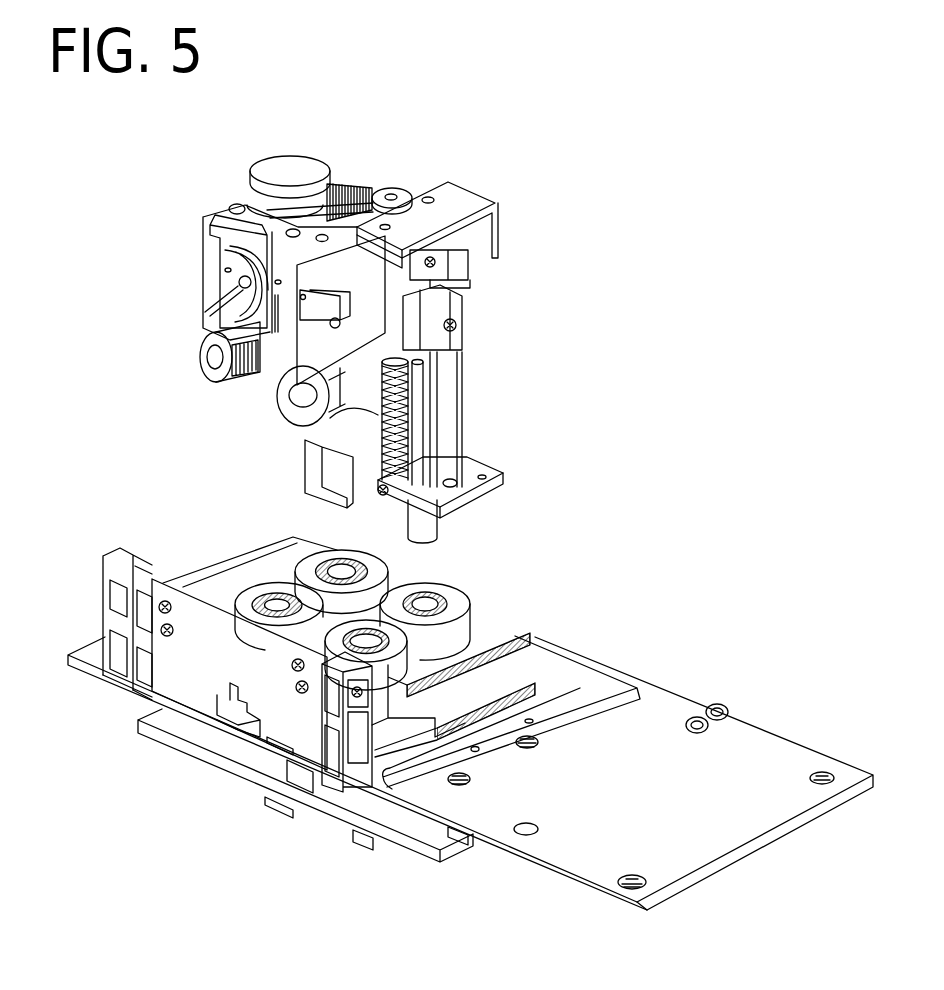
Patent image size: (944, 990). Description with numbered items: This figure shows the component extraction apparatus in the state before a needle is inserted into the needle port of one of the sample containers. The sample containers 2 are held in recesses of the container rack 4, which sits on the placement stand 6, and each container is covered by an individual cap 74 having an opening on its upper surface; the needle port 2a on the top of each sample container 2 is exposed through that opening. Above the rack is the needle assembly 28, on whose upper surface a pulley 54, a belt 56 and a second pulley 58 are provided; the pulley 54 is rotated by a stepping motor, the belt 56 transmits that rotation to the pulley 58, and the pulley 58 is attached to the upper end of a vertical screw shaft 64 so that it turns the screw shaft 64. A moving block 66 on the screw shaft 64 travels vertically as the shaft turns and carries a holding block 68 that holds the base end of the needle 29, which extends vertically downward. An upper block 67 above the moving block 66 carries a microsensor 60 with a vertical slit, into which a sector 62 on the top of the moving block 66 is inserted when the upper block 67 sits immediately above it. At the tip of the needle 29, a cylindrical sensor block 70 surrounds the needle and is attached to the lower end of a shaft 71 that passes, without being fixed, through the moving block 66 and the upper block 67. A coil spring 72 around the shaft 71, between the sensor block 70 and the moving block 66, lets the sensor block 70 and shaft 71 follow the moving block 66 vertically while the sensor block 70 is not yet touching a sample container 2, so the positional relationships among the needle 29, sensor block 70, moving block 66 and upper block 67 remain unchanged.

The sample container 2 is at (440, 600).
The needle port 2a is at (422, 603).
The container rack 4 is at (518, 670).
The placement stand 6 is at (755, 743).
The needle assembly 28 is at (495, 192).
The needle 29 is at (425, 410).
The pulley 54 is at (272, 177).
The belt 56 is at (347, 183).
The pulley 58 is at (405, 188).
The microsensor 60 is at (470, 258).
The sector 62 is at (462, 270).
The screw shaft 64 is at (387, 378).
The moving block 66 is at (383, 332).
The upper block 67 is at (312, 340).
The holding block 68 is at (433, 310).
The sensor block 70 is at (437, 520).
The shaft 71 is at (392, 500).
The coil spring 72 is at (387, 433).
The cap 74 is at (518, 667).